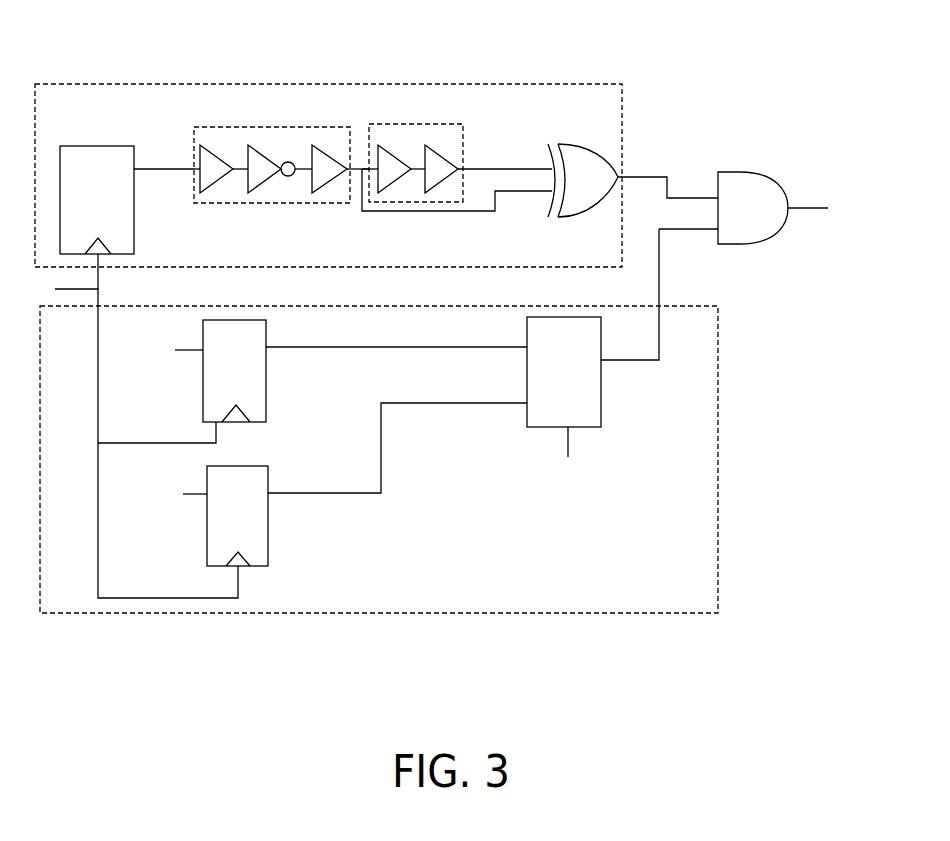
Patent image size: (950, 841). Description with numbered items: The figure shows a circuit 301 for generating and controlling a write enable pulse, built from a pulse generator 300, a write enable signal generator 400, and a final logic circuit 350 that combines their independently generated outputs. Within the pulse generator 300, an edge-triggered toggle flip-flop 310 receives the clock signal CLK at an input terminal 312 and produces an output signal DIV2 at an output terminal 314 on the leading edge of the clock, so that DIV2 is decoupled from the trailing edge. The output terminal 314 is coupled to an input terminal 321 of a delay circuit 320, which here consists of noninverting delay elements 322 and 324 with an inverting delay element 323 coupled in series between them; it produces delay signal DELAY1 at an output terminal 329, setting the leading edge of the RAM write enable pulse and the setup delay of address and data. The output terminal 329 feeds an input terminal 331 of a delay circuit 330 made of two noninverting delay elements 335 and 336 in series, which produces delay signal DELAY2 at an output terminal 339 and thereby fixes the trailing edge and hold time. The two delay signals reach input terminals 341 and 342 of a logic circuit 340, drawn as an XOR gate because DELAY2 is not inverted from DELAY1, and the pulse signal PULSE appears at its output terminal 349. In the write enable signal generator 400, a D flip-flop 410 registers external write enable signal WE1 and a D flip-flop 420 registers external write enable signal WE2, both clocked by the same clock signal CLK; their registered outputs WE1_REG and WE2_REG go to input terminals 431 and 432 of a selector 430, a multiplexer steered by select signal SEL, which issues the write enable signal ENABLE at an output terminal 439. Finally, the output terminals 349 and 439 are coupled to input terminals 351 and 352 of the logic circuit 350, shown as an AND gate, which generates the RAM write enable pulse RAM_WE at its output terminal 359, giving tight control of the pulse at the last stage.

The circuit 301 is at (82, 30).
The pulse generator 300 is at (542, 82).
The edge-triggered toggle flip-flop 310 is at (113, 214).
The input terminal 312 is at (98, 256).
The output terminal 314 is at (135, 168).
The delay circuit 320 is at (257, 204).
The input terminal 321 is at (194, 183).
The noninverting delay element 322 is at (214, 150).
The inverting delay element 323 is at (268, 150).
The noninverting delay element 324 is at (322, 150).
The output terminal 329 is at (353, 171).
The delay circuit 330 is at (414, 126).
The input terminal 331 is at (367, 167).
The noninverting delay element 335 is at (386, 148).
The noninverting delay element 336 is at (442, 149).
The output terminal 339 is at (462, 167).
The logic circuit 340 is at (611, 192).
The input terminal 341 is at (549, 143).
The input terminal 342 is at (550, 192).
The output terminal 349 is at (622, 168).
The logic circuit 350 is at (772, 220).
The input terminal 351 is at (717, 197).
The input terminal 352 is at (717, 232).
The output terminal 359 is at (789, 207).
The write enable signal generator 400 is at (718, 443).
The D flip-flop 410 is at (252, 384).
The D flip-flop 420 is at (255, 529).
The selector 430 is at (580, 385).
The input terminal 431 is at (525, 346).
The input terminal 432 is at (526, 404).
The output terminal 439 is at (603, 364).